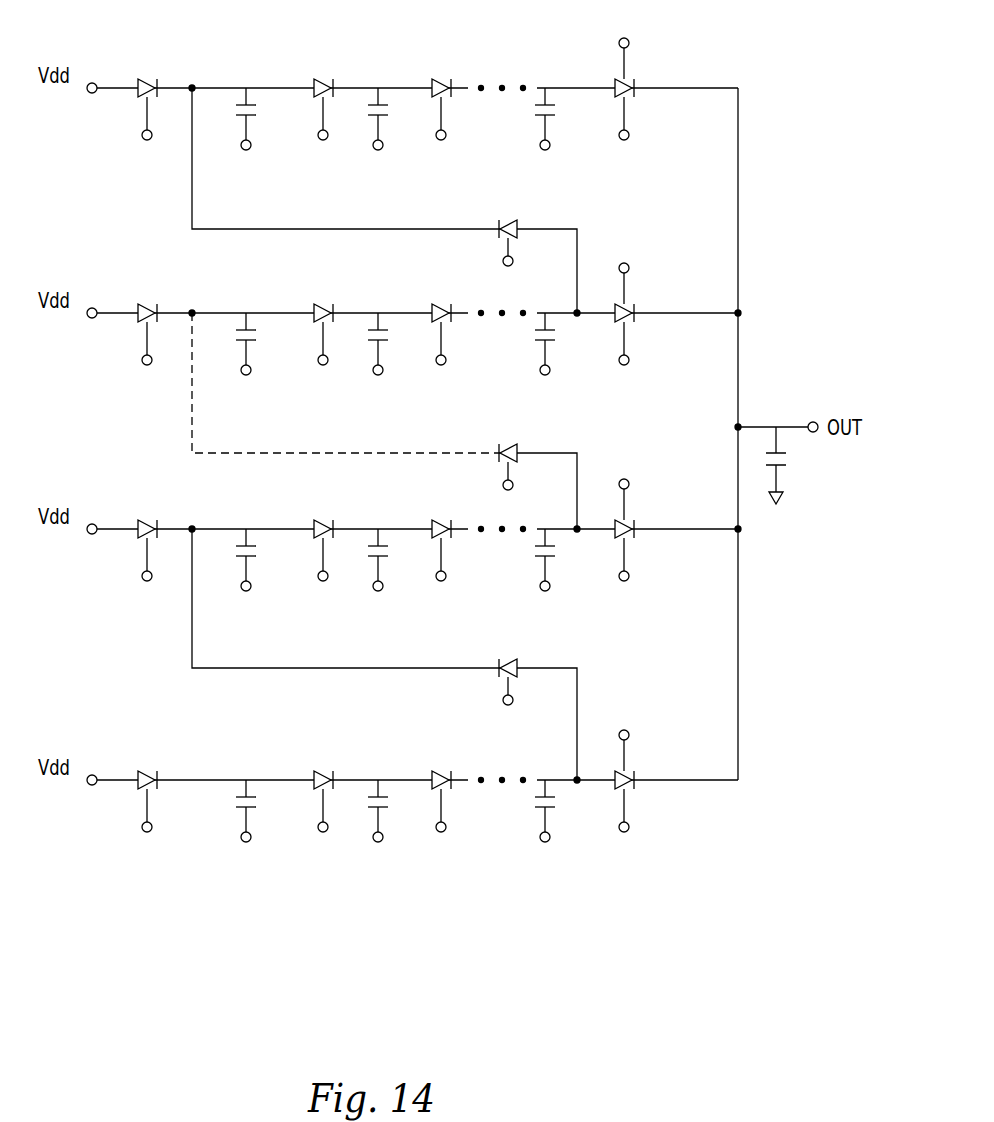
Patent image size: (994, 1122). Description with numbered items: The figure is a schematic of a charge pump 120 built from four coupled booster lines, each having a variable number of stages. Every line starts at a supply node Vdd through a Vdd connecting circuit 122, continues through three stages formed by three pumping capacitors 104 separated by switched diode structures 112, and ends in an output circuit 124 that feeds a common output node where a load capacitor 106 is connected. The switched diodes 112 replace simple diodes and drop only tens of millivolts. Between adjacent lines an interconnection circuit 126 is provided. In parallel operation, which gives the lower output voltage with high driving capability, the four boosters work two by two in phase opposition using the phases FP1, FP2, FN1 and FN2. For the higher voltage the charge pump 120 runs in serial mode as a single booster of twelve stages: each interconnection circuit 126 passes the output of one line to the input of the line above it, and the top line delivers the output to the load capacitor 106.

The pumping capacitor 104 is at (249, 102).
The load capacitor 106 is at (779, 470).
The switched diode structure 112 is at (326, 79).
The charge pump 120 is at (730, 62).
The Vdd connecting circuit 122 is at (150, 79).
The output circuit 124 is at (627, 79).
The interconnection circuit 126 is at (510, 220).